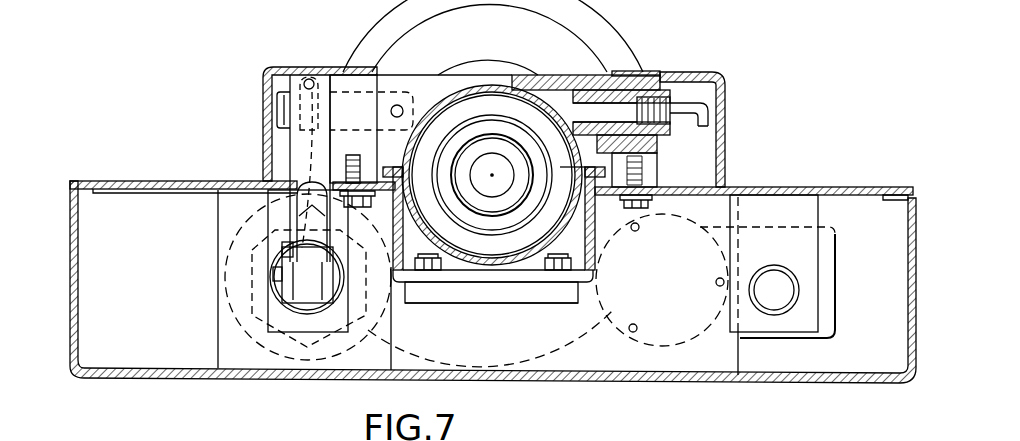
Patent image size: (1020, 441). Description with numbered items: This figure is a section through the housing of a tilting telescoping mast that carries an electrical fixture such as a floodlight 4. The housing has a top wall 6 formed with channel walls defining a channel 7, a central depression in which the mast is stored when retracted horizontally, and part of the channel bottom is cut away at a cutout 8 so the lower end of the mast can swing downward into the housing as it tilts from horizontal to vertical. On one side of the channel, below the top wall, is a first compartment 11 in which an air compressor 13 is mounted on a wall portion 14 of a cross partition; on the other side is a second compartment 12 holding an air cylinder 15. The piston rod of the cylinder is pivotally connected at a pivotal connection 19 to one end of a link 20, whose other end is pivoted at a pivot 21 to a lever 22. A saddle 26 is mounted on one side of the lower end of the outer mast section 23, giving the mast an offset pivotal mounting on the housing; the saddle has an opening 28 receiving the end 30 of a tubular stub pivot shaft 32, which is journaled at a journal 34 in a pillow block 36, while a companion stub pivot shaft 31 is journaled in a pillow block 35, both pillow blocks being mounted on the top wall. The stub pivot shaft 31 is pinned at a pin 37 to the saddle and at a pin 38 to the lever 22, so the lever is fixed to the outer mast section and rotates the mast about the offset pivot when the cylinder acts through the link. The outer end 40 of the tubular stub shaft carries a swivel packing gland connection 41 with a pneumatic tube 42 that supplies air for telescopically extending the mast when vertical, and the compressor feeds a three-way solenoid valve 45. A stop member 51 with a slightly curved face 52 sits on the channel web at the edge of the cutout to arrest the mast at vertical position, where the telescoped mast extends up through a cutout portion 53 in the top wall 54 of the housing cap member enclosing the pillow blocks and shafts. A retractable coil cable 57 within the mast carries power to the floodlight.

The floodlight 4 is at (372, 32).
The top wall 6 is at (850, 188).
The channel 7 is at (606, 243).
The cutout 8 is at (515, 280).
The first compartment 11 is at (857, 342).
The second compartment 12 is at (158, 331).
The air compressor 13 is at (680, 353).
The wall portion 14 is at (620, 353).
The air cylinder 15 is at (227, 268).
The pivotal connection 19 is at (273, 275).
The link 20 is at (313, 296).
The pivot 21 is at (273, 248).
The lever 22 is at (291, 163).
The outer mast section 23 is at (462, 92).
The saddle 26 is at (414, 75).
The opening 28 is at (560, 97).
The end 30 is at (584, 78).
The stub pivot shaft 31 is at (281, 100).
The stub pivot shaft 32 is at (681, 94).
The journal 34 is at (660, 90).
The pillow block 35 is at (350, 95).
The pillow block 36 is at (650, 169).
The pin 37 is at (403, 111).
The pin 38 is at (306, 80).
The outer end 40 is at (696, 74).
The swivel packing gland connection 41 is at (672, 128).
The pneumatic tube 42 is at (690, 108).
The 3-way solenoid valve 45 is at (803, 262).
The stop member 51 is at (555, 304).
The curved face 52 is at (485, 295).
The cutout portion 53 is at (608, 68).
The top wall 54 is at (642, 72).
The coil cable 57 is at (503, 200).